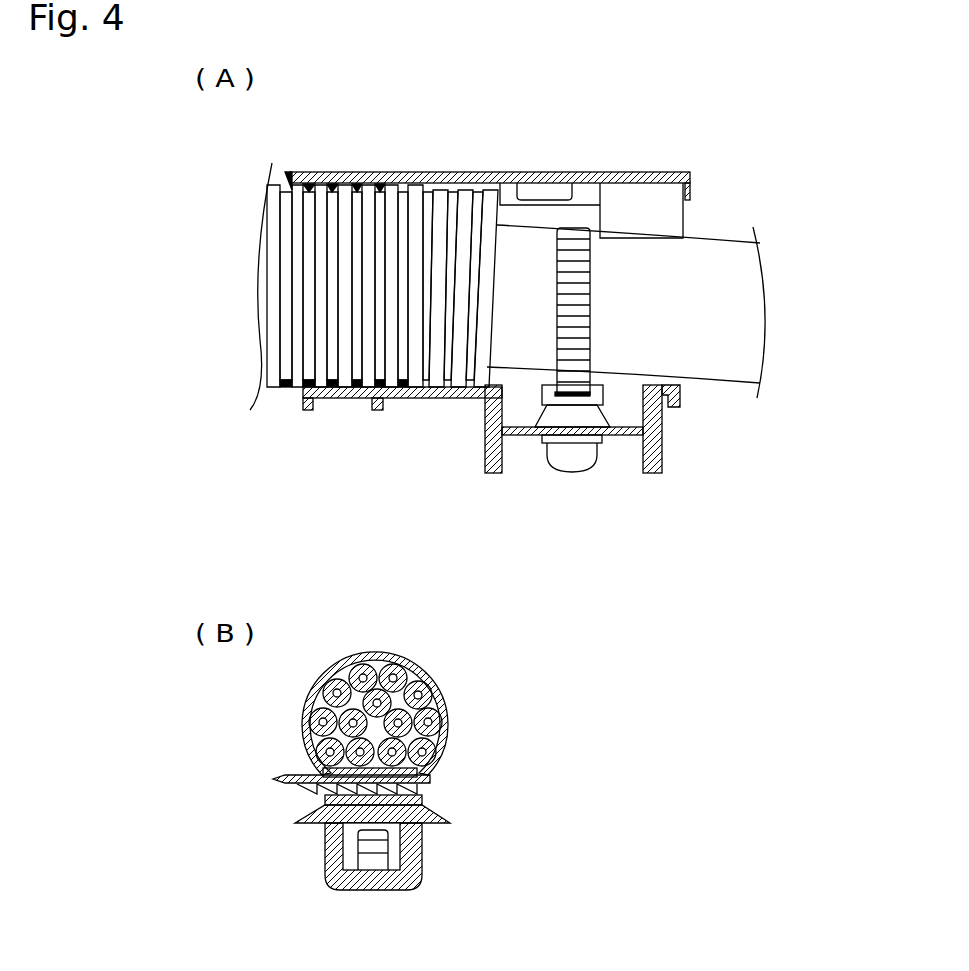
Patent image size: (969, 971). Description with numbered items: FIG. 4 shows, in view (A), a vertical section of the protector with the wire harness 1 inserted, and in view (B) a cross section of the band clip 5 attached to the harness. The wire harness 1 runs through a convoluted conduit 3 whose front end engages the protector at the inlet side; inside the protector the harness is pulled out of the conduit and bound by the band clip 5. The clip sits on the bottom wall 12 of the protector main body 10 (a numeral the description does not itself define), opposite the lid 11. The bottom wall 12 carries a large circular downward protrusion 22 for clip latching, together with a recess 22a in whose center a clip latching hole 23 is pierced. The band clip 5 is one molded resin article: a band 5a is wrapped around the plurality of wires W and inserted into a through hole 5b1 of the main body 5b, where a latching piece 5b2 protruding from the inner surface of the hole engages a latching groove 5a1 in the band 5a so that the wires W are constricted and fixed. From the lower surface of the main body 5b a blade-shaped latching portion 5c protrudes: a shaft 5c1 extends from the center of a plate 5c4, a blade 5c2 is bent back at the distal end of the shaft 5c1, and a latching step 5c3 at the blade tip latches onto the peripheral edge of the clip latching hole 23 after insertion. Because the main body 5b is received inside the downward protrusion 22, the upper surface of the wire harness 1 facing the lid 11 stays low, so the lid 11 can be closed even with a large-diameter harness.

The wire harness 1 is at (630, 250).
The convoluted conduit 3 is at (271, 317).
The band clip 5 is at (509, 533).
The band 5a is at (572, 243).
The latching groove 5a1 is at (315, 787).
The main body 5b is at (607, 393).
The through hole 5b1 is at (435, 768).
The latching piece 5b2 is at (363, 857).
The blade-shaped latching portion 5c is at (592, 458).
The shaft 5c1 is at (423, 857).
The blade 5c2 is at (360, 840).
The latching step 5c3 is at (407, 880).
The plate 5c4 is at (447, 815).
The base plate 10 is at (350, 405).
The lid 11 is at (603, 170).
The bottom wall 12 is at (440, 398).
The downward protrusion 22 is at (660, 458).
The recess 22a is at (623, 433).
The clip latching hole 23 is at (564, 438).
The wires W is at (708, 347).